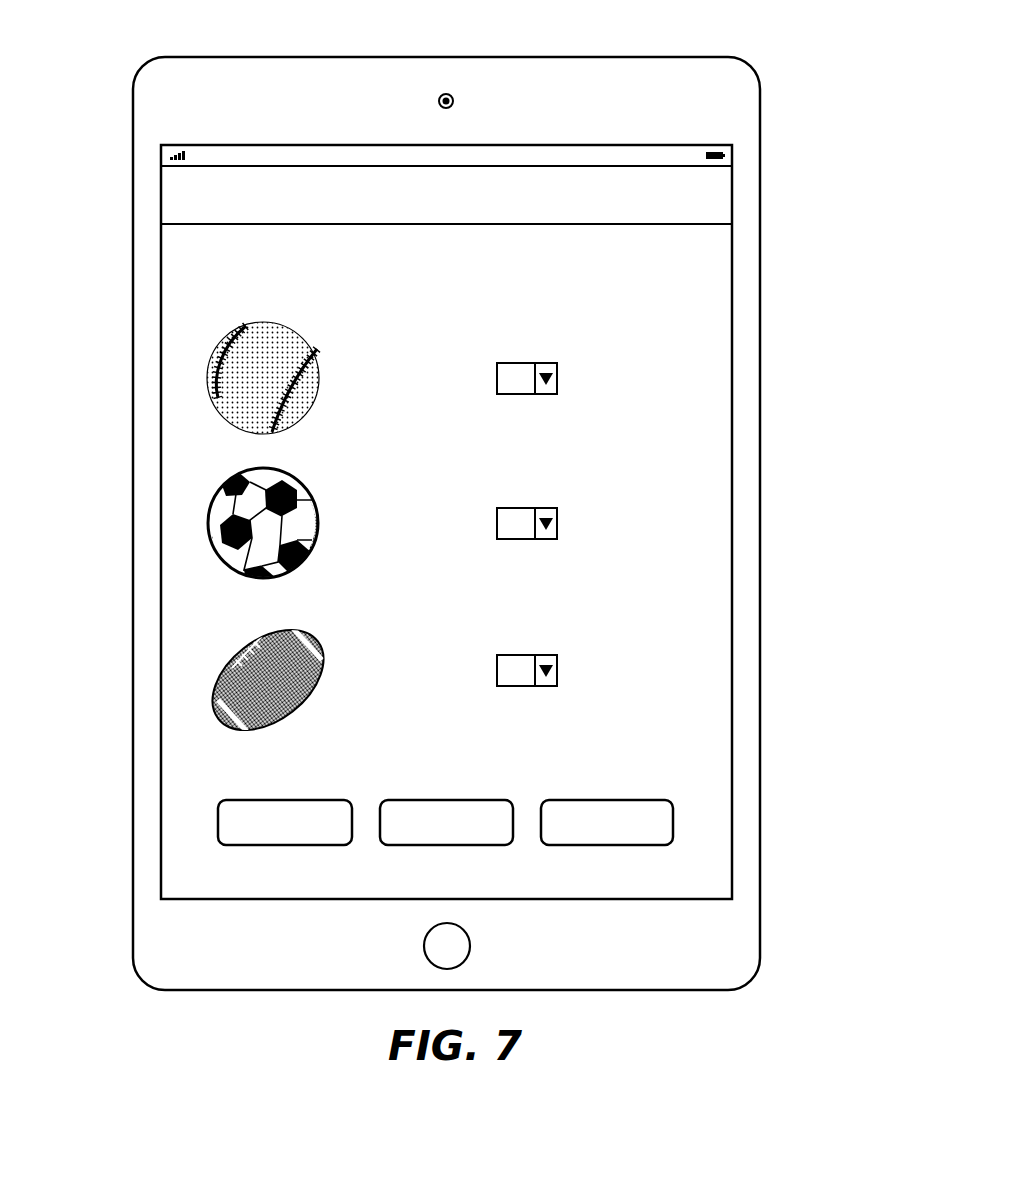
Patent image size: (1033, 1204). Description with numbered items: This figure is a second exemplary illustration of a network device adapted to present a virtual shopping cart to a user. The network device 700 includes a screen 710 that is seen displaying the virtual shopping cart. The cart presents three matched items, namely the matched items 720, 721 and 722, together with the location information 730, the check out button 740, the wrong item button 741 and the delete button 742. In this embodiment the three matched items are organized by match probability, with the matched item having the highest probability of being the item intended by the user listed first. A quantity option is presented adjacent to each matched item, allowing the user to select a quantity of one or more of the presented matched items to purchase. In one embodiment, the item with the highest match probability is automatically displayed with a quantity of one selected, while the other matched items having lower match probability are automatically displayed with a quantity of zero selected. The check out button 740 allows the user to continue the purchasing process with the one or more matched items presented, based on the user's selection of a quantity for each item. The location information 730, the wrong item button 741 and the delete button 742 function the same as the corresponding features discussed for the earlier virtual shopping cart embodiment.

The network device 700 is at (80, 209).
The screen 710 is at (176, 458).
The matched item 720 is at (322, 350).
The matched item 721 is at (316, 474).
The matched item 722 is at (320, 620).
The location information 730 is at (703, 262).
The check out button 740 is at (243, 799).
The wrong item button 741 is at (403, 799).
The delete button 742 is at (578, 799).